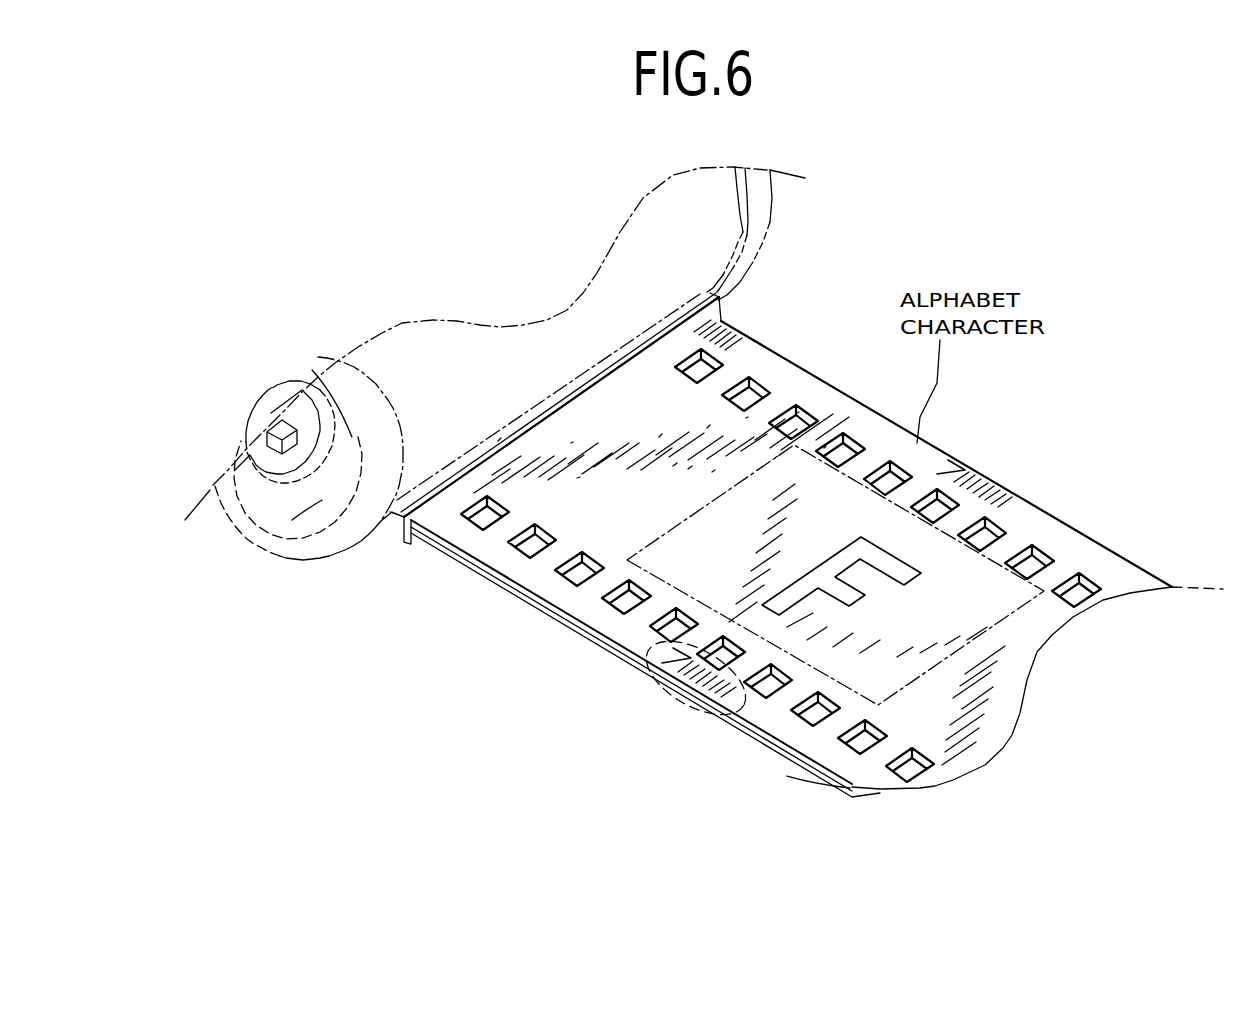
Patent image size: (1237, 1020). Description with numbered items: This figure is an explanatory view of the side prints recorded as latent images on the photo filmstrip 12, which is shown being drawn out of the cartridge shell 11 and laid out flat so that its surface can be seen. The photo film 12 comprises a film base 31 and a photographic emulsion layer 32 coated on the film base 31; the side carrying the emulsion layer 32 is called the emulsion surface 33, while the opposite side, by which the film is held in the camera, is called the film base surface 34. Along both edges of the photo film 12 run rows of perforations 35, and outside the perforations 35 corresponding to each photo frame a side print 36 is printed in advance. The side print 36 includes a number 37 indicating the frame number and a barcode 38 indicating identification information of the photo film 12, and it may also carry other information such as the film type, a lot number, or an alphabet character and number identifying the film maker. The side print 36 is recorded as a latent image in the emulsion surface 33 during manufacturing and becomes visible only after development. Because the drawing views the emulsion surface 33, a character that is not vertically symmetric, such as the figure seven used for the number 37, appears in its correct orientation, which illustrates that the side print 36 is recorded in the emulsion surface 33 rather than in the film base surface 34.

The cartridge shell 11 is at (281, 556).
The photo filmstrip 12 is at (572, 634).
The film base 31 is at (505, 588).
The photographic emulsion layer 32 is at (470, 558).
The emulsion surface 33 is at (713, 440).
The film base surface 34 is at (610, 655).
The perforations 35 is at (843, 440).
The side print 36 is at (682, 700).
The number 37 is at (952, 457).
The barcode 38 is at (993, 477).